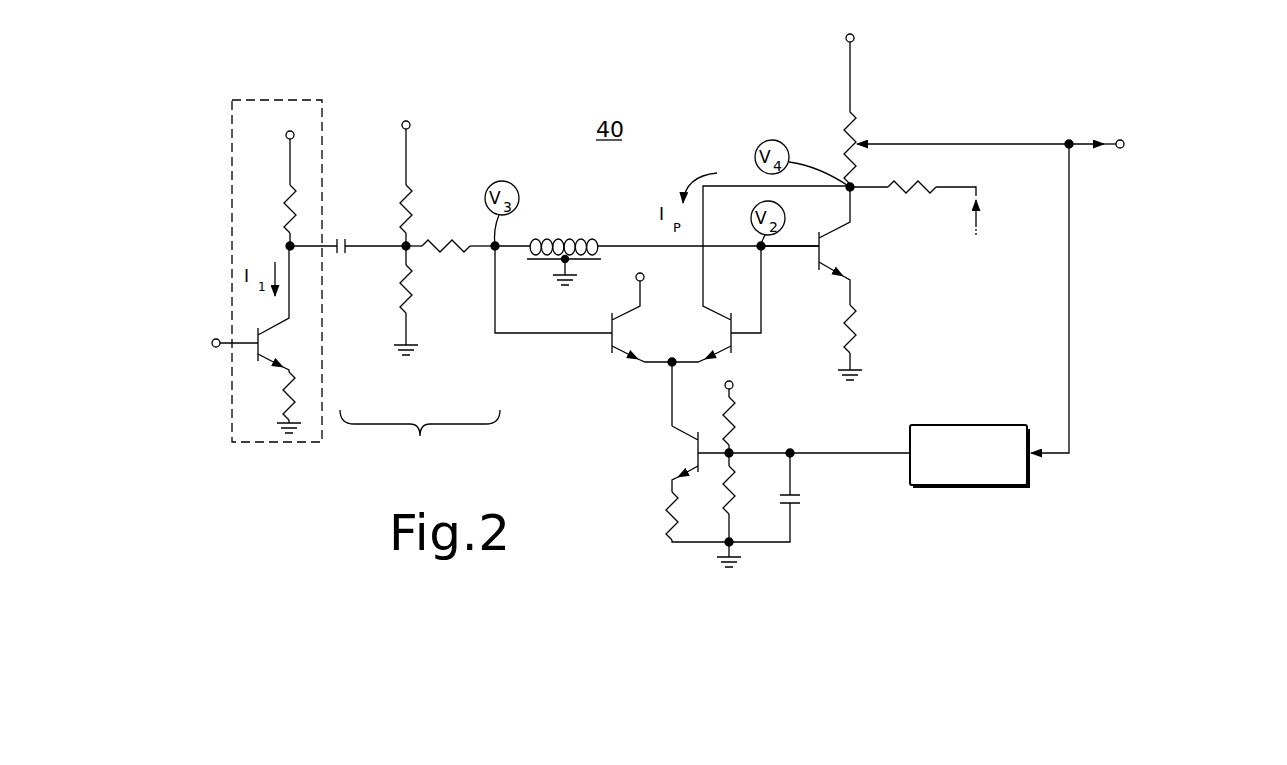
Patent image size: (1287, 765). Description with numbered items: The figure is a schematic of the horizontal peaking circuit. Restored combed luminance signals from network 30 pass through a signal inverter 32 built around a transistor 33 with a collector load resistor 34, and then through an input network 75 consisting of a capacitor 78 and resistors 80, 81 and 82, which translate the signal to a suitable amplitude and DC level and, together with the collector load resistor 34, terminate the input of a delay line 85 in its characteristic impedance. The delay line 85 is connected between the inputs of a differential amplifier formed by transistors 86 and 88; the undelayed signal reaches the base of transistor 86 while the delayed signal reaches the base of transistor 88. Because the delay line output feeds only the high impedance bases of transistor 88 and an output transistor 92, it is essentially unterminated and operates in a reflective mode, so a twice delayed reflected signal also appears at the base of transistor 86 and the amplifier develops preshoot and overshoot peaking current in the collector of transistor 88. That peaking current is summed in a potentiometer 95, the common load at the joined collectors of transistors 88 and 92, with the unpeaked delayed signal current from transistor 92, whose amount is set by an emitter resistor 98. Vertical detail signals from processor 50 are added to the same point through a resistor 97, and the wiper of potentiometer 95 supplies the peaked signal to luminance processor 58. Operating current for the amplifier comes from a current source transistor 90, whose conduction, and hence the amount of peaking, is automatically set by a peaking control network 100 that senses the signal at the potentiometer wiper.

The network 30 is at (168, 363).
The signal inverter 32 is at (290, 442).
The transistor 33 is at (297, 351).
The collector load resistor 34 is at (285, 177).
The processor 50 is at (969, 286).
The luminance processor 58 is at (1167, 159).
The input network 75 is at (429, 468).
The capacitor 78 is at (350, 252).
The resistor 80 is at (409, 171).
The resistor 81 is at (415, 300).
The resistor 82 is at (450, 253).
The delay line 85 is at (568, 241).
The transistor 86 is at (651, 348).
The transistor 88 is at (715, 348).
The transistor 90 is at (683, 463).
The output transistor 92 is at (854, 258).
The potentiometer 95 is at (896, 130).
The resistor 97 is at (930, 187).
The emitter resistor 98 is at (874, 342).
The peaking control network 100 is at (978, 423).